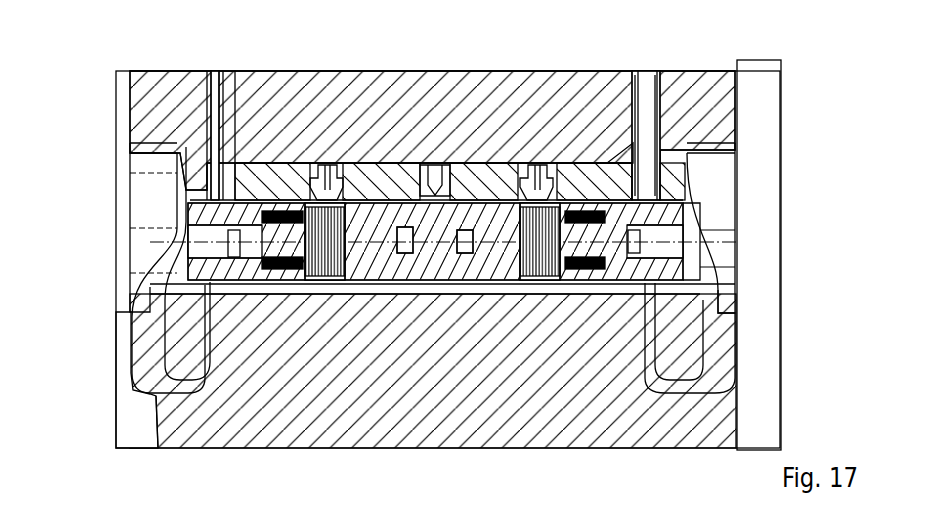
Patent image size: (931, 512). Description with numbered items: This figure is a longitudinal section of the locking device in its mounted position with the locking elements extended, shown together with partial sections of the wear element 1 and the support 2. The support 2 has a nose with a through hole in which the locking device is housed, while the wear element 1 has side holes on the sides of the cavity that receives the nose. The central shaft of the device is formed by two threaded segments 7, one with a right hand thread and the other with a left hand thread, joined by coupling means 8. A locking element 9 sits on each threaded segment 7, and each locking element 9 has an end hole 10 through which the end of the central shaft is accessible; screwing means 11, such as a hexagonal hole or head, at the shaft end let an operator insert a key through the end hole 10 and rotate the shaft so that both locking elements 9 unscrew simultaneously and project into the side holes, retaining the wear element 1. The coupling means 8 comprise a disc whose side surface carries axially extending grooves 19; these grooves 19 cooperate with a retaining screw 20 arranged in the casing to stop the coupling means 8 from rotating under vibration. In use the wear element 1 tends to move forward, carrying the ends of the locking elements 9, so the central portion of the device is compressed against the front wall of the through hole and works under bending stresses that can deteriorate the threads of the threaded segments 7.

The wear element 1 is at (135, 380).
The support 2 is at (512, 103).
The threaded segment 7 is at (578, 285).
The coupling means 8 is at (422, 273).
The locking element 9 is at (657, 158).
The end hole 10 is at (665, 250).
The screwing means 11 is at (632, 285).
The grooves 19 is at (435, 290).
The retaining screw 20 is at (415, 285).